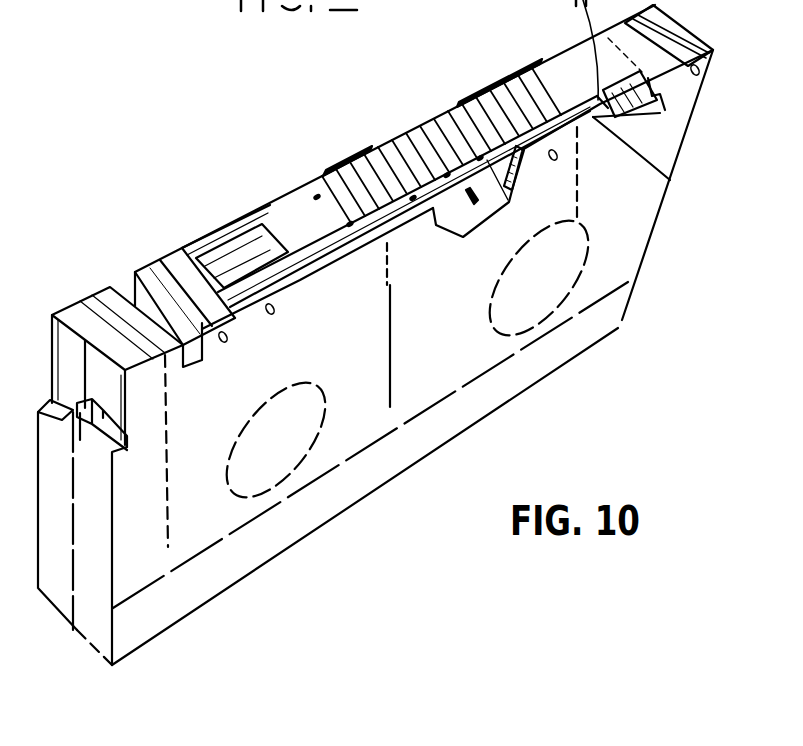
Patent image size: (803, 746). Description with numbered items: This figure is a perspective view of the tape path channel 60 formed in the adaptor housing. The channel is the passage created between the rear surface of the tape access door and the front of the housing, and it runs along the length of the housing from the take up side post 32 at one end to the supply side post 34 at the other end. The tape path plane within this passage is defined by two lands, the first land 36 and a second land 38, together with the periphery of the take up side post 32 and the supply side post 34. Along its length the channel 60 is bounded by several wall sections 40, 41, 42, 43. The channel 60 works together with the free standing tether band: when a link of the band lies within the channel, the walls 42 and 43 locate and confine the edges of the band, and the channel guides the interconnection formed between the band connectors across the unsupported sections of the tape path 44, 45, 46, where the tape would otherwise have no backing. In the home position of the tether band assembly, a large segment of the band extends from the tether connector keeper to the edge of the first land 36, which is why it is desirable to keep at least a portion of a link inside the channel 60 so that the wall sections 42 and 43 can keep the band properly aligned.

The take up side post 32 is at (195, 243).
The supply side post 34 is at (703, 43).
The first land 36 is at (397, 227).
The land 38 is at (670, 180).
The wall section 40 is at (325, 175).
The wall section 41 is at (360, 247).
The wall section 42 is at (500, 83).
The wall section 43 is at (558, 128).
The unsupported section of the tape path 44 is at (291, 284).
The unsupported section of the tape path 45 is at (472, 203).
The unsupported section of the tape path 46 is at (673, 98).
The tape path channel 60 is at (412, 150).